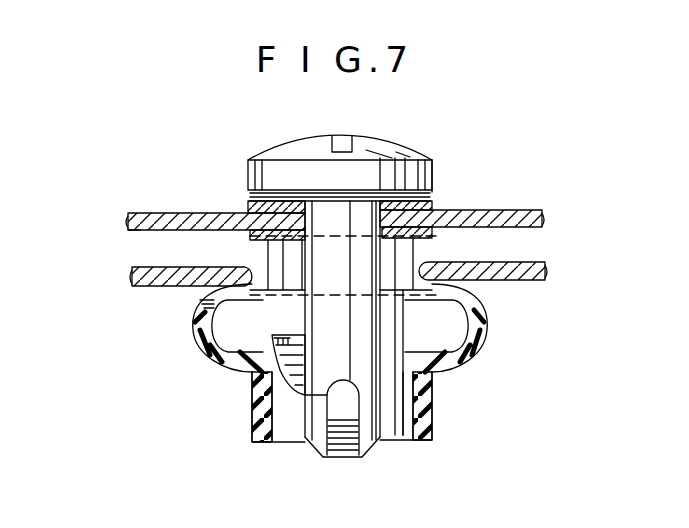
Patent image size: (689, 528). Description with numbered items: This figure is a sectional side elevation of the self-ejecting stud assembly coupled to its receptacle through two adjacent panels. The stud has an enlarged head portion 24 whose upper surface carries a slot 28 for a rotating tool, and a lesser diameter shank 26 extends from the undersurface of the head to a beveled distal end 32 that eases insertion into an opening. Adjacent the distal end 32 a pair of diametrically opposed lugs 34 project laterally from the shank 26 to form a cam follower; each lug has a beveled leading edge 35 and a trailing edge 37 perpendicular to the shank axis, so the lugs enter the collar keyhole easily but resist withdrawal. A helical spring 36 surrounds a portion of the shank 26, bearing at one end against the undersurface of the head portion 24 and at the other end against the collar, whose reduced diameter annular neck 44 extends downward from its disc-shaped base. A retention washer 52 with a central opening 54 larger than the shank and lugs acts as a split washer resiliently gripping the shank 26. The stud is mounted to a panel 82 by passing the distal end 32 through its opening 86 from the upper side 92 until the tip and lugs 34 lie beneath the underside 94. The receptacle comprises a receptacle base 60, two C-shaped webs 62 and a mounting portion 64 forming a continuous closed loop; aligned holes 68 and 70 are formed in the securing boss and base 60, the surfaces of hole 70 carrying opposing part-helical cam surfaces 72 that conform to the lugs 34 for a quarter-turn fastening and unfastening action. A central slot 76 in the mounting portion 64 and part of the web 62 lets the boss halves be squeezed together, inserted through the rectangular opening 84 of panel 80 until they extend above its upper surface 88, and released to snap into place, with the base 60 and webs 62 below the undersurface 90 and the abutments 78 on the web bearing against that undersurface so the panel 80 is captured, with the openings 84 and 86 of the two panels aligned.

The head portion 24 is at (258, 162).
The shank 26 is at (256, 298).
The slot 28 is at (346, 150).
The distal end 32 is at (346, 456).
The lugs 34 is at (330, 398).
The leading edge 35 is at (342, 448).
The helical spring 36 is at (434, 190).
The trailing edge 37 is at (340, 380).
The annular neck 44 is at (246, 212).
The retention washer 52 is at (440, 238).
The central opening 54 is at (236, 240).
The receptacle base 60 is at (434, 412).
The C-shaped webs 62 is at (520, 361).
The mounting portion 64 is at (430, 297).
The hole 68 is at (392, 292).
The hole 70 is at (420, 380).
The cam surfaces 72 is at (300, 342).
The central slot 76 is at (486, 314).
The abutments 78 is at (442, 286).
The panel 80 is at (538, 264).
The panel 82 is at (528, 210).
The opening 84 is at (262, 272).
The opening 86 is at (440, 212).
The upper surface 88 is at (144, 286).
The undersurface 90 is at (194, 308).
The upper side 92 is at (148, 212).
The underside 94 is at (128, 228).